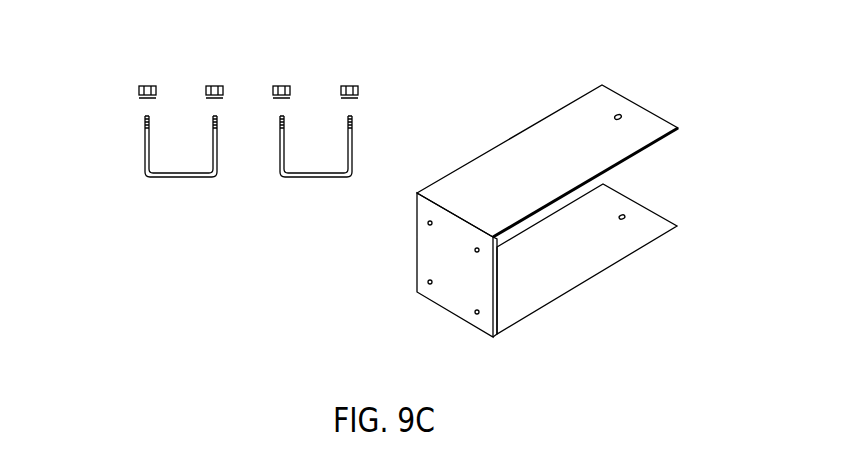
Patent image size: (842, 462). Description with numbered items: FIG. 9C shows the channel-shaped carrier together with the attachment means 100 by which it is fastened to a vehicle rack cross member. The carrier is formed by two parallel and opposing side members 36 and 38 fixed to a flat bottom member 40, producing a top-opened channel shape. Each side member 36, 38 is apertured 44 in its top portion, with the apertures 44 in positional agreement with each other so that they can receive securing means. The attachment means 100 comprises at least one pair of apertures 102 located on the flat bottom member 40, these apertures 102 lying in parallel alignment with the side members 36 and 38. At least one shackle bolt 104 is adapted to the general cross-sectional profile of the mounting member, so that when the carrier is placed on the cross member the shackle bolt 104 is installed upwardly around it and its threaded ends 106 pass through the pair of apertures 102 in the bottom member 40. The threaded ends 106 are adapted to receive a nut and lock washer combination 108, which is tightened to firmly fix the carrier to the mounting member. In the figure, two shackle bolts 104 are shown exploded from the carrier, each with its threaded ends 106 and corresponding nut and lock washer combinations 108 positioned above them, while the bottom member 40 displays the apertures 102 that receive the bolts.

The attachment means 100 is at (132, 196).
The shackle bolt 104 is at (322, 178).
The threaded ends 106 is at (145, 120).
The nut and lock washer combination 108 is at (348, 80).
The flat bottom member 40 is at (449, 255).
The apertures 102 is at (476, 313).
The side member 36 is at (588, 132).
The side member 38 is at (581, 245).
The apertures 44 is at (615, 114).